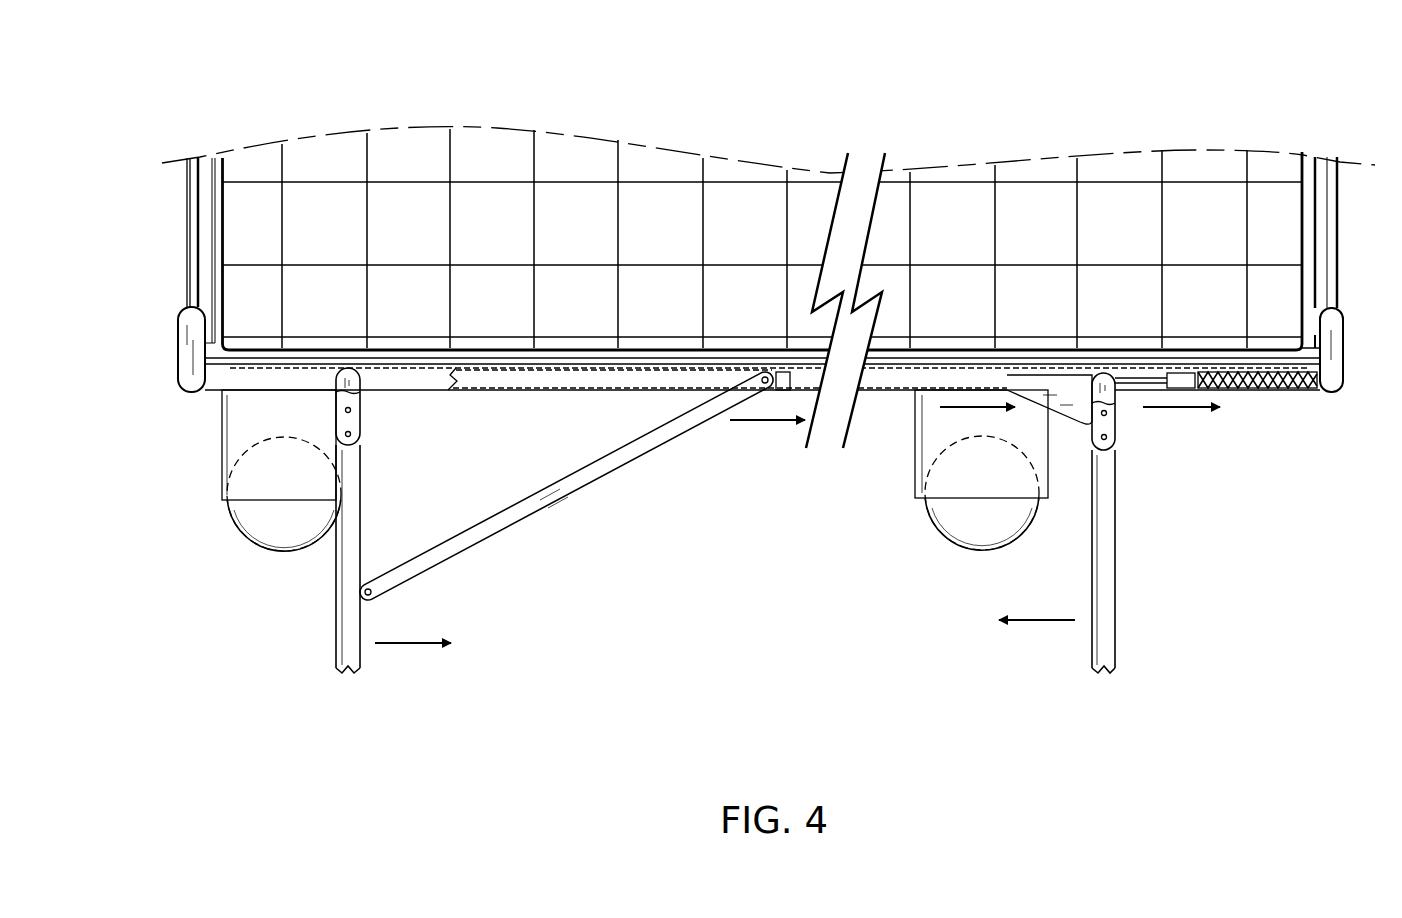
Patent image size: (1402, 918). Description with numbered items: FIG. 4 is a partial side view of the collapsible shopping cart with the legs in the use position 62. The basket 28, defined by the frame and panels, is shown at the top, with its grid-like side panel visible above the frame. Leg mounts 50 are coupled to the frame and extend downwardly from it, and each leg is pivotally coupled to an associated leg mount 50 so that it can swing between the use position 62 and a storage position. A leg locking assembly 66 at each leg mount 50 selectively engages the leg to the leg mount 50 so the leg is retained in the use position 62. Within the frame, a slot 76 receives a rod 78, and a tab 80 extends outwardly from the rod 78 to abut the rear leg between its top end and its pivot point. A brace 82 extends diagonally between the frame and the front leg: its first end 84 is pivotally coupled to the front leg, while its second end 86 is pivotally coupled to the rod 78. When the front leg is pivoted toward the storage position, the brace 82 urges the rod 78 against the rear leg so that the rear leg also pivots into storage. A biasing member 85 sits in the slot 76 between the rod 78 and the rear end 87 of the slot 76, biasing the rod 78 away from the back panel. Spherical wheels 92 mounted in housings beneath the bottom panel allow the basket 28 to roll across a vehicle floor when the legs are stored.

The basket 28 is at (170, 211).
The leg mount 50 is at (352, 385).
The use position 62 is at (311, 618).
The leg locking assembly 66 is at (334, 409).
The slot 76 is at (447, 396).
The rod 78 is at (885, 382).
The tab 80 is at (1075, 413).
The brace 82 is at (560, 492).
The first end 84 is at (363, 603).
The biasing member 85 is at (1297, 390).
The second end 86 is at (771, 397).
The rear end 87 is at (1317, 393).
The wheel 92 is at (247, 533).